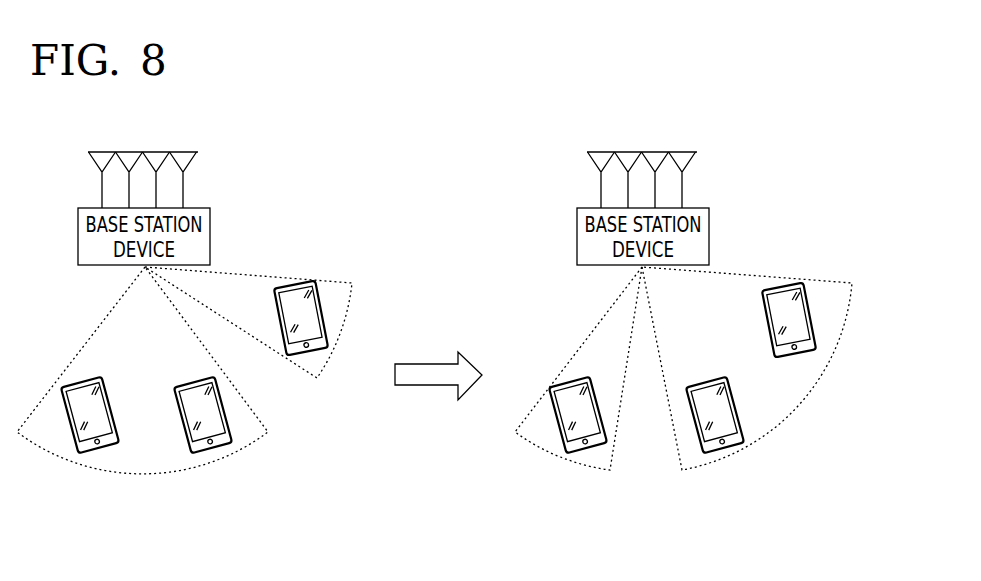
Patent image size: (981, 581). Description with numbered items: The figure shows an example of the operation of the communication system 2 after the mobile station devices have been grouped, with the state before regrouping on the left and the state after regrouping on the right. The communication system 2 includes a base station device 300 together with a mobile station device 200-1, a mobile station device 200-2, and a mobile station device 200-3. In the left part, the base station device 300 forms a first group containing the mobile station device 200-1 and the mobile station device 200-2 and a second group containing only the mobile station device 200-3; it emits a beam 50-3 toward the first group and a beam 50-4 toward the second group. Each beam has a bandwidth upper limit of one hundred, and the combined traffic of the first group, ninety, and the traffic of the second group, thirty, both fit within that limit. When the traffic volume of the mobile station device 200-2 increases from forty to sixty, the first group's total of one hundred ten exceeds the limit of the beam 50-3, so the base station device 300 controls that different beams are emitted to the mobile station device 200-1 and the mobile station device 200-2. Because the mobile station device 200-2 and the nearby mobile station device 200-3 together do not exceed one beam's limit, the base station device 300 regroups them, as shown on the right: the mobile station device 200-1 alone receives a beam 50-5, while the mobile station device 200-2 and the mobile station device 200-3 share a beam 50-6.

The communication system 2 is at (477, 321).
The base station device 300 is at (210, 243).
The beam 50-3 is at (90, 339).
The beam 50-4 is at (343, 282).
The beam 50-5 is at (587, 339).
The beam 50-6 is at (851, 283).
The mobile station device 200-1 is at (99, 452).
The mobile station device 200-2 is at (213, 452).
The mobile station device 200-3 is at (297, 282).